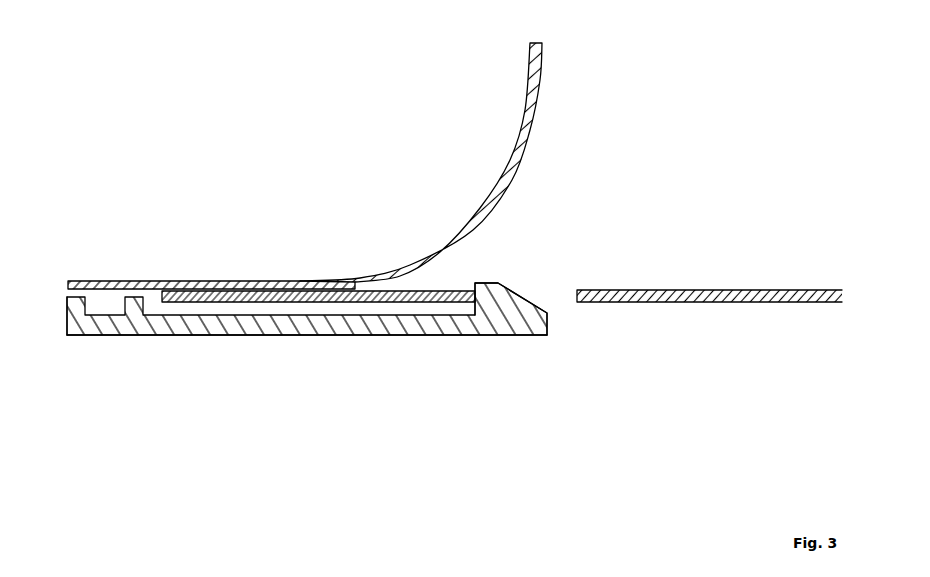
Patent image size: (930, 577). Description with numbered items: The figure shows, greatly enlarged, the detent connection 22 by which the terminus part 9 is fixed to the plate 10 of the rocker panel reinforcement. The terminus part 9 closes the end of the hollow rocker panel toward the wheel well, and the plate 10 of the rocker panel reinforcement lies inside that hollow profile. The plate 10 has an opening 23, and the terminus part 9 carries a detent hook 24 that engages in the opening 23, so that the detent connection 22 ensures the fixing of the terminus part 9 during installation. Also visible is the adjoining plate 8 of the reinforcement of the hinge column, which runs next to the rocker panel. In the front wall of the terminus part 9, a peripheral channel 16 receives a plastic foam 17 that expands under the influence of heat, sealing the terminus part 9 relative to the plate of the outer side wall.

The plate of a reinforcement of the hinge column 8 is at (455, 233).
The terminus part 9 is at (198, 342).
The plate of the rocker panel reinforcement 10 is at (643, 300).
The peripheral channel 16 is at (67, 315).
The plastic foam 17 is at (93, 300).
The detent connection 22 is at (468, 345).
The opening 23 is at (560, 300).
The detent hook 24 is at (397, 333).